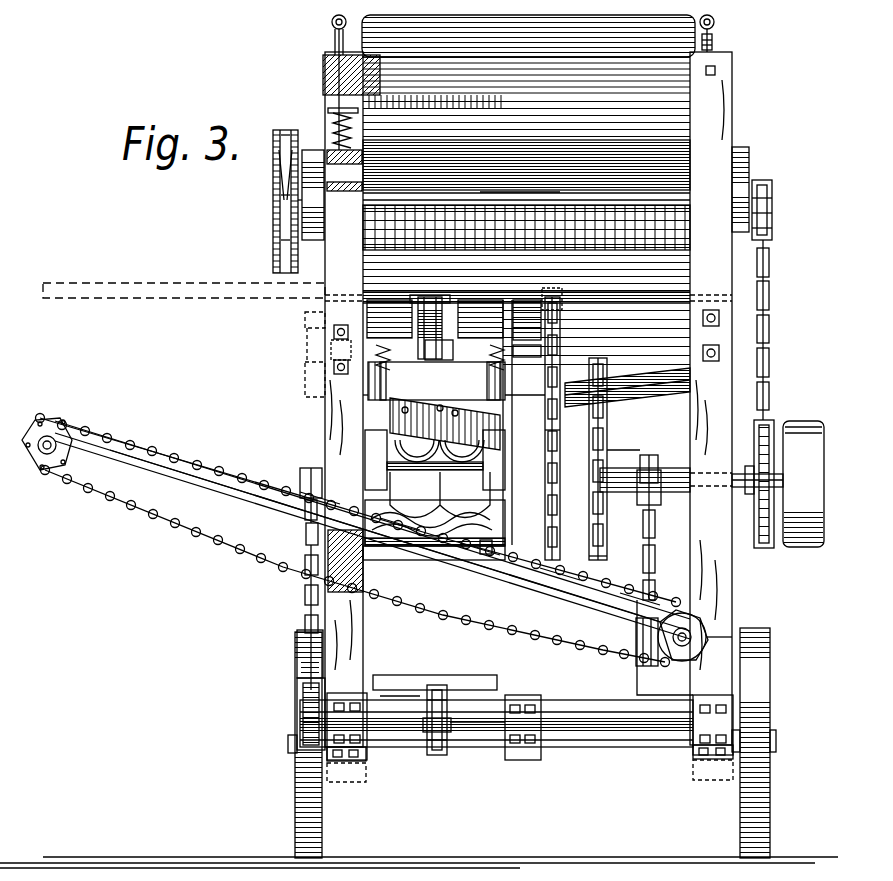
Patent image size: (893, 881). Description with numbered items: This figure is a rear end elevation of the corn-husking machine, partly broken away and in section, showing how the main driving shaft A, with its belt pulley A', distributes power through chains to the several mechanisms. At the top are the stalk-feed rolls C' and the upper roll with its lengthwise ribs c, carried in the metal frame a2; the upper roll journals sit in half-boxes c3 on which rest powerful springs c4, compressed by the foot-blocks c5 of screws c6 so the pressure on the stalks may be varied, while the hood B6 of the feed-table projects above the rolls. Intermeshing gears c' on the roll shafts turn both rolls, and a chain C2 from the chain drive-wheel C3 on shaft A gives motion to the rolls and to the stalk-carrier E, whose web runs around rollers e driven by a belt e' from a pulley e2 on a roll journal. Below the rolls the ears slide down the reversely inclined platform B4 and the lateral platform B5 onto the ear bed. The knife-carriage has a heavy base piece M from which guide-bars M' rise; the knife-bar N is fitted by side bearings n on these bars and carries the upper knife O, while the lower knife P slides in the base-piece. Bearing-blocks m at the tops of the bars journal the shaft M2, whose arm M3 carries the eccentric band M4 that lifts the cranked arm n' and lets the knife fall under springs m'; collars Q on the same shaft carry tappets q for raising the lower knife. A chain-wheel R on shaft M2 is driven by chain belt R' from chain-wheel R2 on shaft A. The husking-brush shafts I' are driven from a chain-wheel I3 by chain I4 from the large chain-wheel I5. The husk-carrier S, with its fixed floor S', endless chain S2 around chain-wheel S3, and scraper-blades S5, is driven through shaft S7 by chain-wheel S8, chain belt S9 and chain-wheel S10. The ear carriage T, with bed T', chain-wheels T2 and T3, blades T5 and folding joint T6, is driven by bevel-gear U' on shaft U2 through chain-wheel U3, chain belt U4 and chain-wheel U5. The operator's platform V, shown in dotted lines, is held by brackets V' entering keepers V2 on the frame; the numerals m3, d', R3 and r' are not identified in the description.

The frame of the stalk-feed rolls a2 is at (323, 90).
The screws c6 is at (333, 38).
The hood B6 is at (560, 44).
The foot-blocks c5 is at (327, 111).
The springs c4 is at (360, 129).
The chain drive-wheel C3 is at (363, 154).
The rollers e is at (493, 201).
The pulley e2 is at (275, 166).
The belt e' is at (265, 192).
The half-boxes c3 is at (275, 241).
The intermeshing gears c' is at (526, 197).
The lower feed-roll C' is at (526, 170).
The ribs c is at (500, 190).
The stalk-carrier E is at (575, 211).
The chain C2 is at (770, 215).
The pulley A' is at (803, 484).
The main driving shaft A is at (691, 499).
The lower platform B4 is at (618, 329).
The lower platform B5 is at (620, 400).
The chain-wheel R is at (526, 314).
The bearing-blocks m is at (414, 330).
The knife-carriage shaft M2 is at (422, 300).
The curved strap or band M4 is at (458, 291).
The collars Q is at (542, 293).
The block m3 is at (514, 322).
The cranked arm n' is at (458, 383).
The arm M3 is at (443, 351).
The tappets q is at (515, 422).
The springs m' is at (527, 356).
The knife-bar N is at (440, 381).
The side bearings n is at (435, 381).
The upper knife O is at (445, 424).
The lower knife P is at (439, 452).
The base piece or plate M is at (435, 487).
The trough d' is at (431, 504).
The bar R3 is at (435, 534).
The bracket r' is at (430, 552).
The guide-bars M' is at (440, 406).
The chain-wheel R2 is at (506, 386).
The chain belt R' is at (562, 436).
The chain-wheel I3 is at (592, 364).
The brush-shafts I' is at (618, 464).
The chain I4 is at (608, 452).
The large chain-wheel I5 is at (591, 554).
The chain-wheel U5 is at (650, 460).
The chain belt U4 is at (655, 556).
The platform V is at (184, 281).
The keepers V2 is at (305, 325).
The brackets or arms V' is at (288, 345).
The carriage for the husked ears T is at (372, 530).
The bed T' is at (385, 536).
The chain-wheel T3 is at (44, 432).
The blades T5 is at (94, 430).
The joint T6 is at (303, 536).
The lower chain-wheel T2 is at (702, 626).
The chain-wheel S10 is at (303, 456).
The chain belt S9 is at (305, 608).
The chain-wheel S8 is at (297, 720).
The husk-carrier S is at (516, 708).
The bed or floor S' is at (400, 678).
The scraper-blades S5 is at (450, 682).
The endless chain S2 is at (449, 755).
The chain-wheel S3 is at (428, 750).
The shaft S7 is at (488, 724).
The shaft U2 is at (625, 636).
The bevel-gear U' is at (718, 648).
The chain-wheel U3 is at (660, 672).